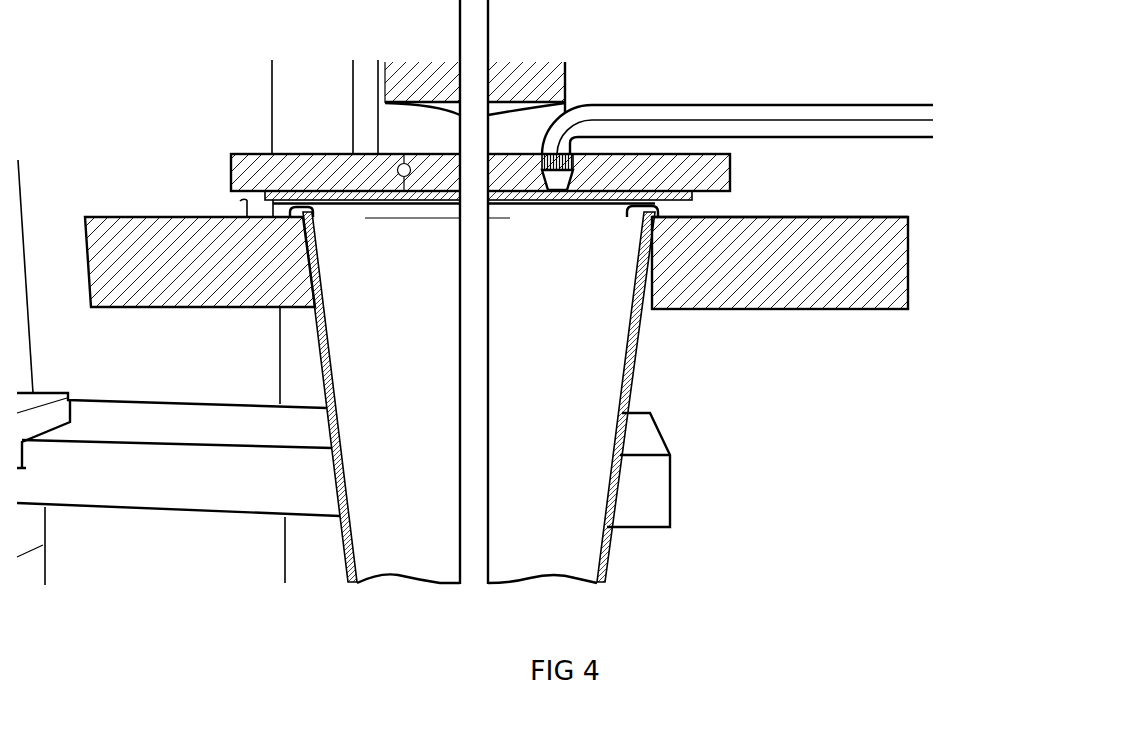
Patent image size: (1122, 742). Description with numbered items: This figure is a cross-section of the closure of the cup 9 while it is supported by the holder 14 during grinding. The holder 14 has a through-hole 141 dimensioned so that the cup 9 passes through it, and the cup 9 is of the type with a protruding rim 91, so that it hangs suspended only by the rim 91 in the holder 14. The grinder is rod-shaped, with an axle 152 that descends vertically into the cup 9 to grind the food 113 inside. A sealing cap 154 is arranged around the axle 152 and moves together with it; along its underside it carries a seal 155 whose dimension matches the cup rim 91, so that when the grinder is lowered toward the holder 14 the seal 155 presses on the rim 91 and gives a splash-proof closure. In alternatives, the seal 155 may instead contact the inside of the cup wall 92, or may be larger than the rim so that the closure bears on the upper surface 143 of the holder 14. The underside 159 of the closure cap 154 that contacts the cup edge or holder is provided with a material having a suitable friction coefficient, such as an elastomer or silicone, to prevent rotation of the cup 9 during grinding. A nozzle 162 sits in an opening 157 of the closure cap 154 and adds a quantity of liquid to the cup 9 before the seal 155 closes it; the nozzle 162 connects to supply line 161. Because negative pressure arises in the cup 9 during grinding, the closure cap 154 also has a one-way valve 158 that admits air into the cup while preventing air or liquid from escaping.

The cup 9 is at (632, 368).
The holder 14 is at (798, 312).
The rim of the cup 91 is at (628, 212).
The cup wall 92 is at (318, 265).
The food 113 is at (518, 383).
The through-hole 141 is at (645, 295).
The upper surface of the holder 143 is at (816, 217).
The axle 152 is at (459, 284).
The sealing cap 154 is at (730, 166).
The seal 155 is at (694, 197).
The opening of the closure cap 157 is at (578, 183).
The one-way valve 158 is at (402, 164).
The underside of the closure cap 159 is at (248, 212).
The feed tube 161 is at (753, 105).
The nozzle 162 is at (563, 180).